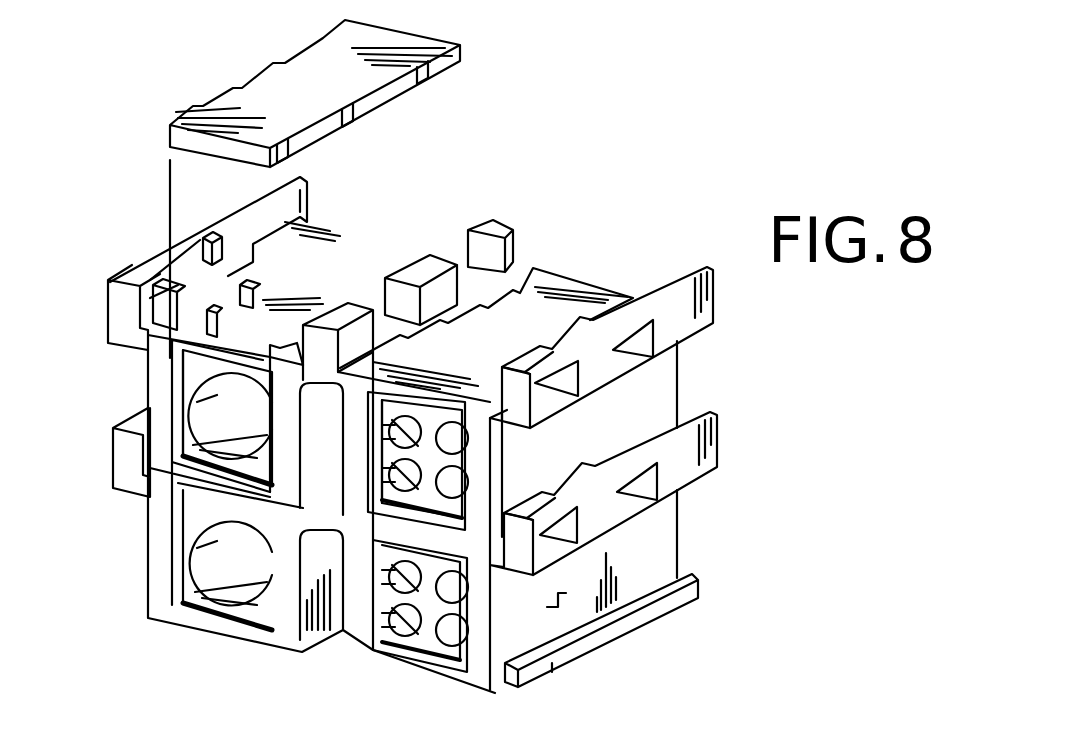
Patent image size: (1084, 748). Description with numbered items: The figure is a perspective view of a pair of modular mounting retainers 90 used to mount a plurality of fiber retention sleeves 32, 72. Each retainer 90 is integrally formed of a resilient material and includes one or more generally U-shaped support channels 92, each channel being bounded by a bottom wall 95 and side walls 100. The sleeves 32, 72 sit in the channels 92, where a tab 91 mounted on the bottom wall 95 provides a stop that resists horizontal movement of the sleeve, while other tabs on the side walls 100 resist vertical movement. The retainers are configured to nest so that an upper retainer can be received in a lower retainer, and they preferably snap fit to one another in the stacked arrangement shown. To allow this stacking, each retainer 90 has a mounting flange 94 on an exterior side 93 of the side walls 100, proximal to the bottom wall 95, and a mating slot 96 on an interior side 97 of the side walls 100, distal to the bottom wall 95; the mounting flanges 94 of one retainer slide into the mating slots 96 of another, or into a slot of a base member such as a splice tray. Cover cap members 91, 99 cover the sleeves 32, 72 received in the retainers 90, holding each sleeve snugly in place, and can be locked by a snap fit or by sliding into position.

The sleeve 32 is at (425, 458).
The sleeve 72 is at (348, 283).
The retainer 90 is at (682, 362).
The tab 91 is at (511, 348).
The support channel 92 is at (173, 375).
The exterior side 93 is at (560, 603).
The mounting flange 94 is at (635, 624).
The bottom wall 95 is at (182, 628).
The mating slot 96 is at (298, 197).
The interior side 97 is at (198, 258).
The cover cap member 99 is at (279, 82).
The side wall 100 is at (162, 436).